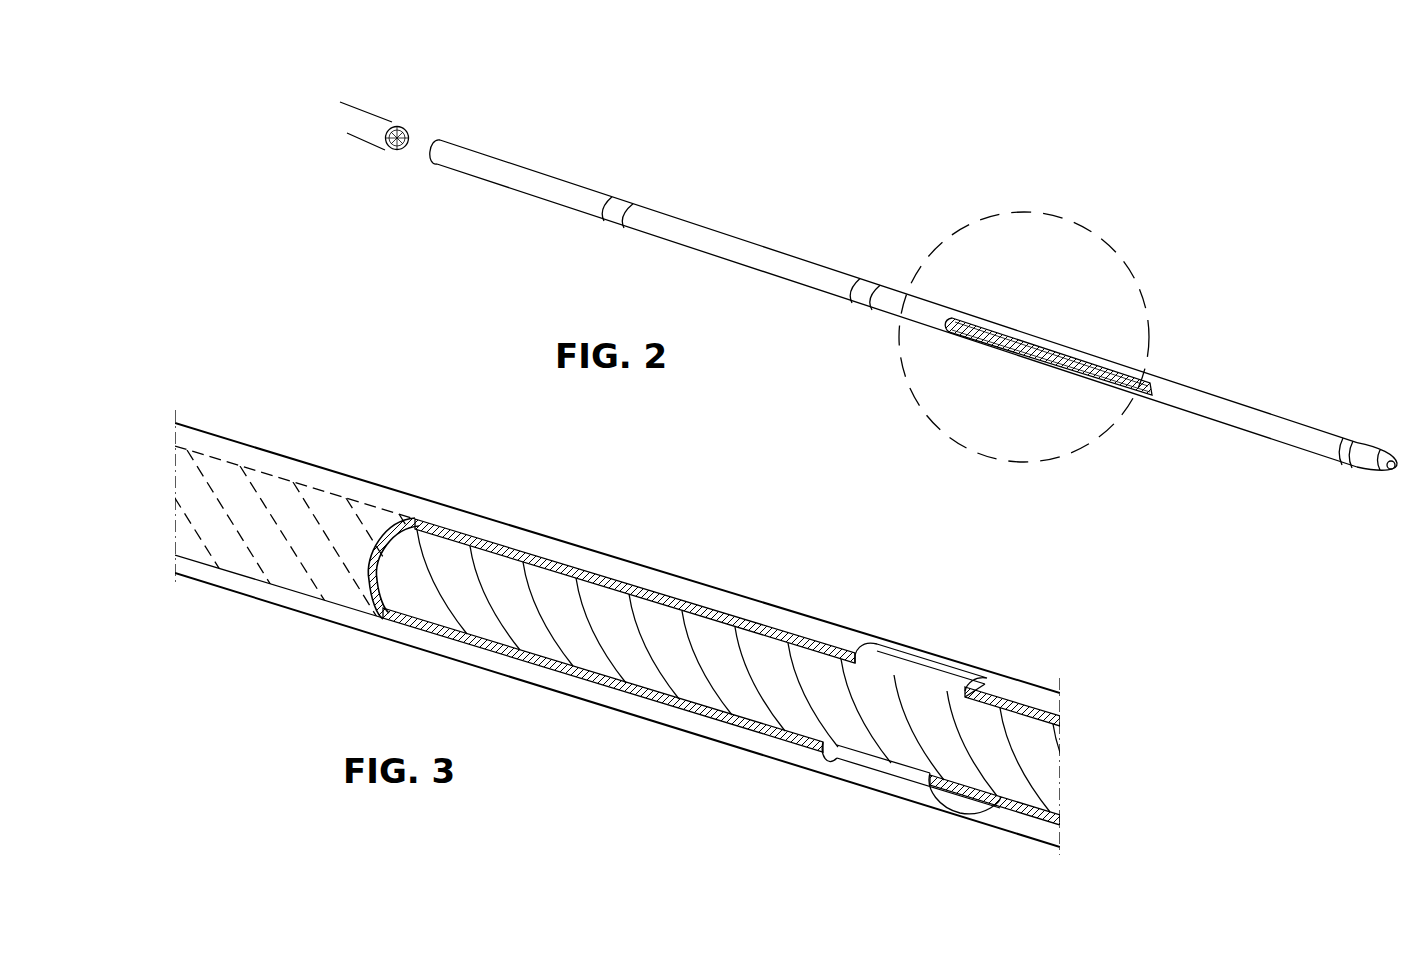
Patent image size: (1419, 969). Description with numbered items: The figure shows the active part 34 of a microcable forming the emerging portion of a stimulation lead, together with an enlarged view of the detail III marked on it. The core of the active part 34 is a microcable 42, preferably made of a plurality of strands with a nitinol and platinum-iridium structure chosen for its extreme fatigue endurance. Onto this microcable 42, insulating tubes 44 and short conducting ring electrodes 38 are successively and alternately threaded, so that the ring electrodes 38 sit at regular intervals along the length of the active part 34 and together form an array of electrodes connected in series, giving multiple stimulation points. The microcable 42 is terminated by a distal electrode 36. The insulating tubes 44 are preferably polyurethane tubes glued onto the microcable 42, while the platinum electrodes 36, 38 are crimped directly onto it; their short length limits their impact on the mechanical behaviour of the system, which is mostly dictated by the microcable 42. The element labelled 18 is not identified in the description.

In FIG. 2, the cable section 18 is at (1100, 395).
In FIG. 2, the active part 34 is at (805, 205).
In FIG. 2, the distal electrode 36 is at (1372, 474).
In FIG. 2, the ring electrodes 38 is at (614, 226).
In FIG. 3, the ring electrodes 38 is at (892, 800).
In FIG. 2, the microcable 42 is at (412, 138).
In FIG. 3, the microcable 42 is at (627, 672).
In FIG. 2, the insulating tubes 44 is at (540, 173).
In FIG. 3, the insulating tubes 44 is at (624, 580).
In FIG. 2, the detail III is at (1132, 258).